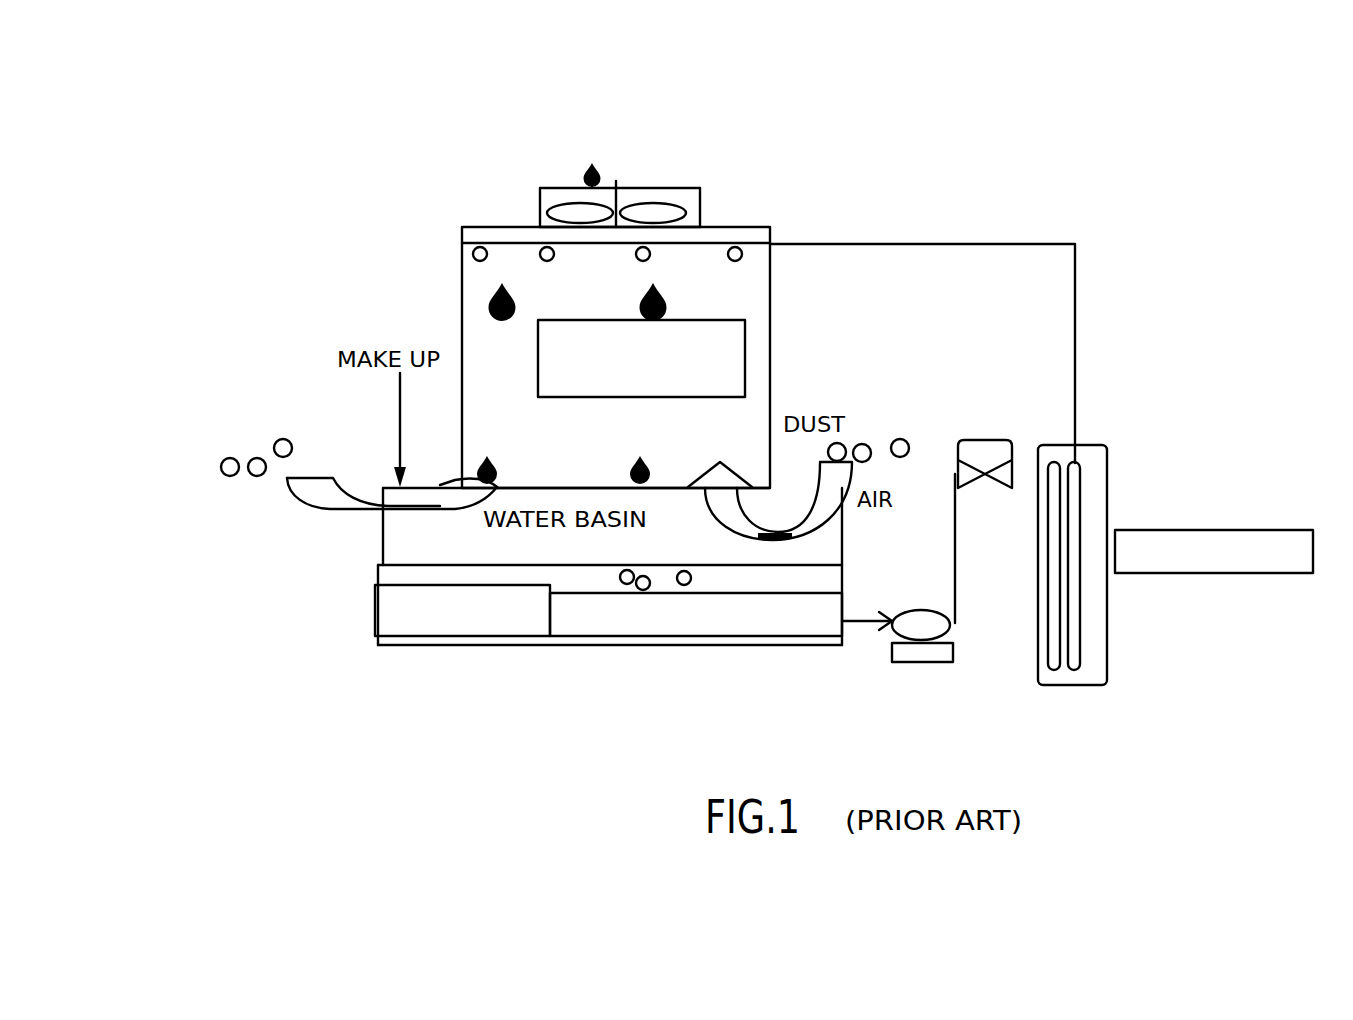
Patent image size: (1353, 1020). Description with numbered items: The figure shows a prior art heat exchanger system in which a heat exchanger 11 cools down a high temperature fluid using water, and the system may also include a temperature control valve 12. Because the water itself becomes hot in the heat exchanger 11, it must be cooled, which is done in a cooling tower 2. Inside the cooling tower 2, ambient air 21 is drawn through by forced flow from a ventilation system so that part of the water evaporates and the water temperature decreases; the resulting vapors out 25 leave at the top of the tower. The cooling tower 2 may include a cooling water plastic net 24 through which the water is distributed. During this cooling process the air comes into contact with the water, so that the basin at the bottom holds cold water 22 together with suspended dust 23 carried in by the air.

The cooling tower 2 is at (425, 268).
The heat exchanger 11 is at (1115, 480).
The temperature control valve 12 is at (997, 432).
The ambient air 21 is at (238, 405).
The cold water 22 is at (450, 628).
The suspended dust 23 is at (750, 634).
The cooling water plastic net 24 is at (758, 347).
The vapors out 25 is at (693, 142).